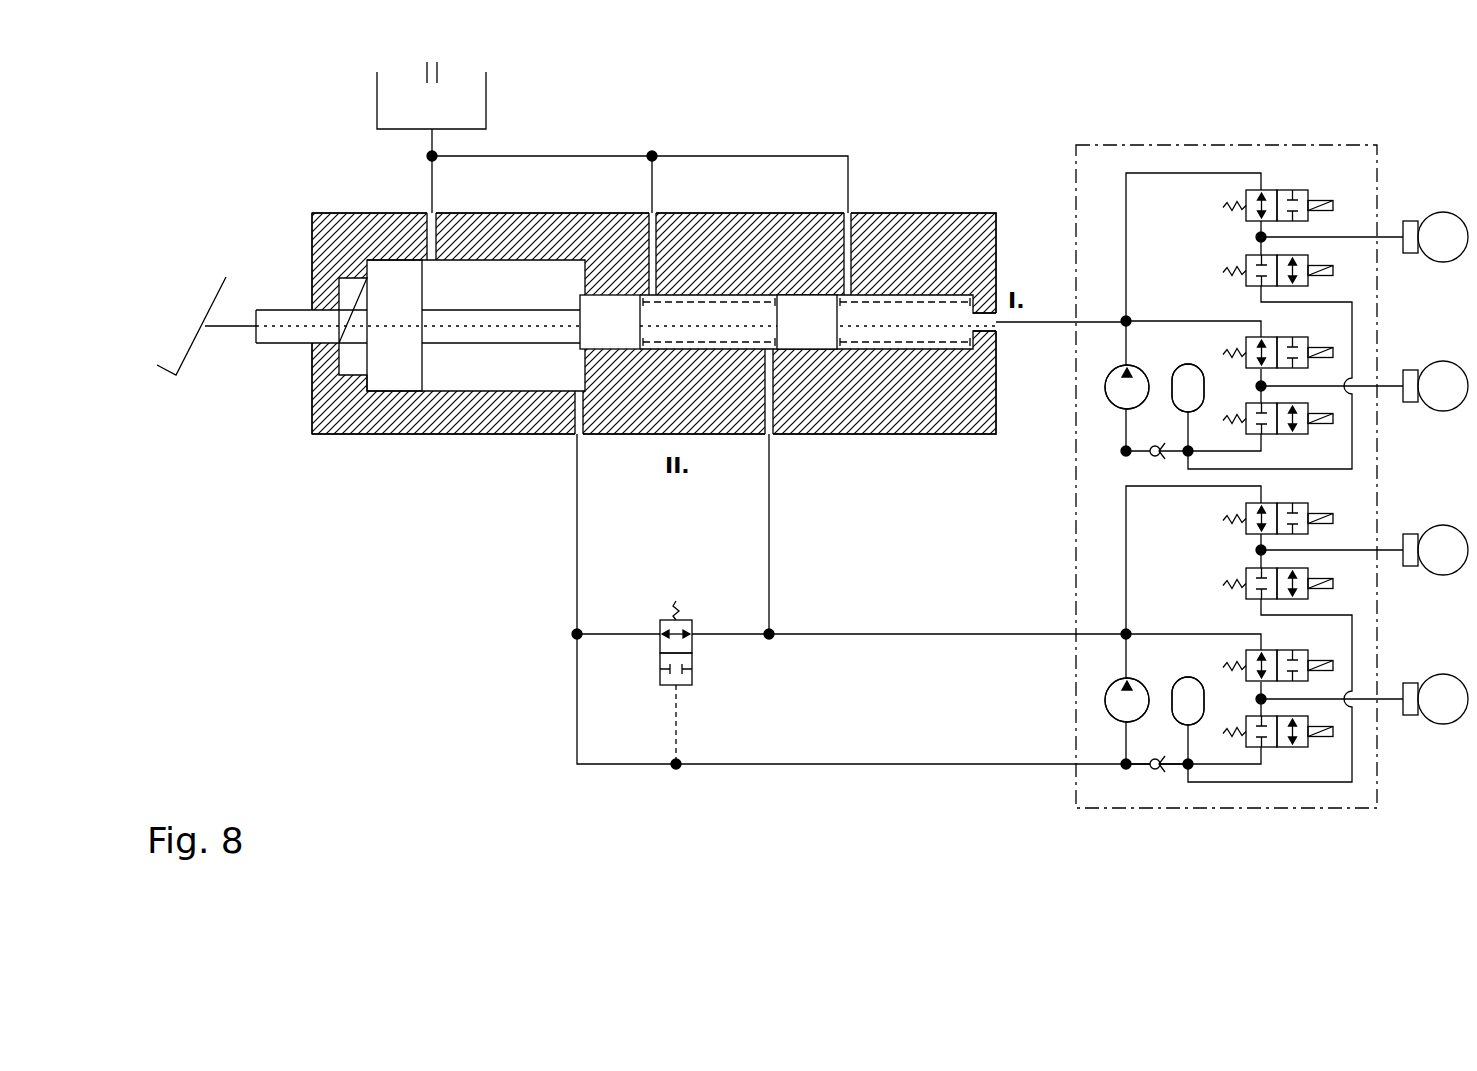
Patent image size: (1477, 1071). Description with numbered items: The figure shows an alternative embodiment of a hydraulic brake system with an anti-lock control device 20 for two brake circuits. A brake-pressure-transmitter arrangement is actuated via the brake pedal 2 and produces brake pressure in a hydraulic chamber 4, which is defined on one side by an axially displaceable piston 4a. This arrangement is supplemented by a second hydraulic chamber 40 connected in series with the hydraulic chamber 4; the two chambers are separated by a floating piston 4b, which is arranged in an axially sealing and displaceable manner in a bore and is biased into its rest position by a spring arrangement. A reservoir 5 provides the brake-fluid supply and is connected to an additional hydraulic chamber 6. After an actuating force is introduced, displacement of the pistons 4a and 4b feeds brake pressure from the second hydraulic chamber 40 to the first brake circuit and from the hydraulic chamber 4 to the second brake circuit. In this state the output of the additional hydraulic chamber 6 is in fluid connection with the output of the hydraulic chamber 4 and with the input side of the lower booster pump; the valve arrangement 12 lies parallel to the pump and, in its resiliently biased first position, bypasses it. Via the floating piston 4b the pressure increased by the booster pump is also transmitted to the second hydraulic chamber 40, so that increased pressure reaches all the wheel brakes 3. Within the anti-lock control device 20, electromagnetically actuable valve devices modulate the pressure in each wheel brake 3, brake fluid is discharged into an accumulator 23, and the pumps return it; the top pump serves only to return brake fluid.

The brake pedal 2 is at (198, 327).
The wheel brake 3 is at (1412, 230).
The hydraulic chamber 4 is at (705, 202).
The piston 4a is at (625, 307).
The floating piston 4b is at (820, 305).
The second hydraulic chamber 40 is at (908, 197).
The reservoir 5 is at (441, 119).
The additional hydraulic chamber 6 is at (509, 303).
The valve arrangement 12 is at (692, 685).
The anti-lock control device 20 is at (1077, 145).
The accumulator 23 is at (1192, 387).